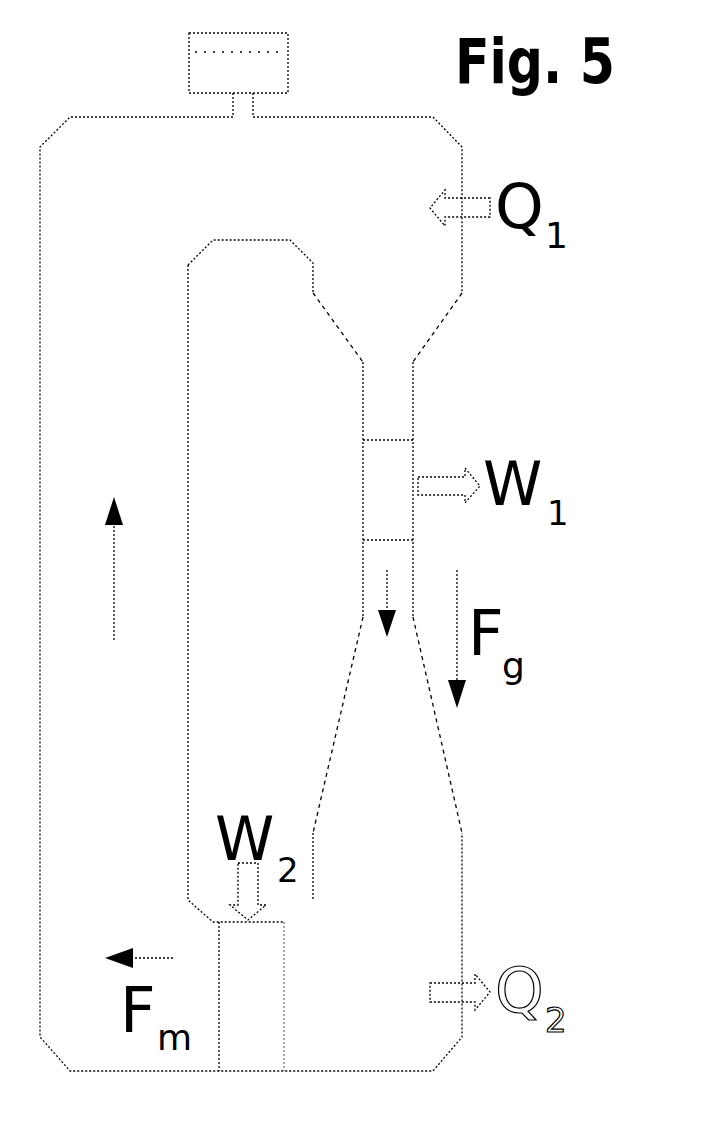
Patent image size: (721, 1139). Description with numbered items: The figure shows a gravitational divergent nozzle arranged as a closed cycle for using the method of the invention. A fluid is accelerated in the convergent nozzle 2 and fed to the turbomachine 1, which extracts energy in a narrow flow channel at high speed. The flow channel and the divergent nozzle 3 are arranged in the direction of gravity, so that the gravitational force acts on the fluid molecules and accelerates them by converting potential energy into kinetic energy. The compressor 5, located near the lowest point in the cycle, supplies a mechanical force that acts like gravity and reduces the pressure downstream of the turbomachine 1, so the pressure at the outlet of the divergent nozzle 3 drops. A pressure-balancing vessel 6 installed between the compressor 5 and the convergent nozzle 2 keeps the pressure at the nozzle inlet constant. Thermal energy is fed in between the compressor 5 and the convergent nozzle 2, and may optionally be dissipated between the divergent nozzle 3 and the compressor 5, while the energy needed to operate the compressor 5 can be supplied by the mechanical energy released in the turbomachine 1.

The turbomachine 1 is at (354, 489).
The convergent nozzle 2 is at (387, 328).
The divergent nozzle 3 is at (387, 725).
The compressor 5 is at (251, 996).
The pressure-balancing vessel 6 is at (264, 75).